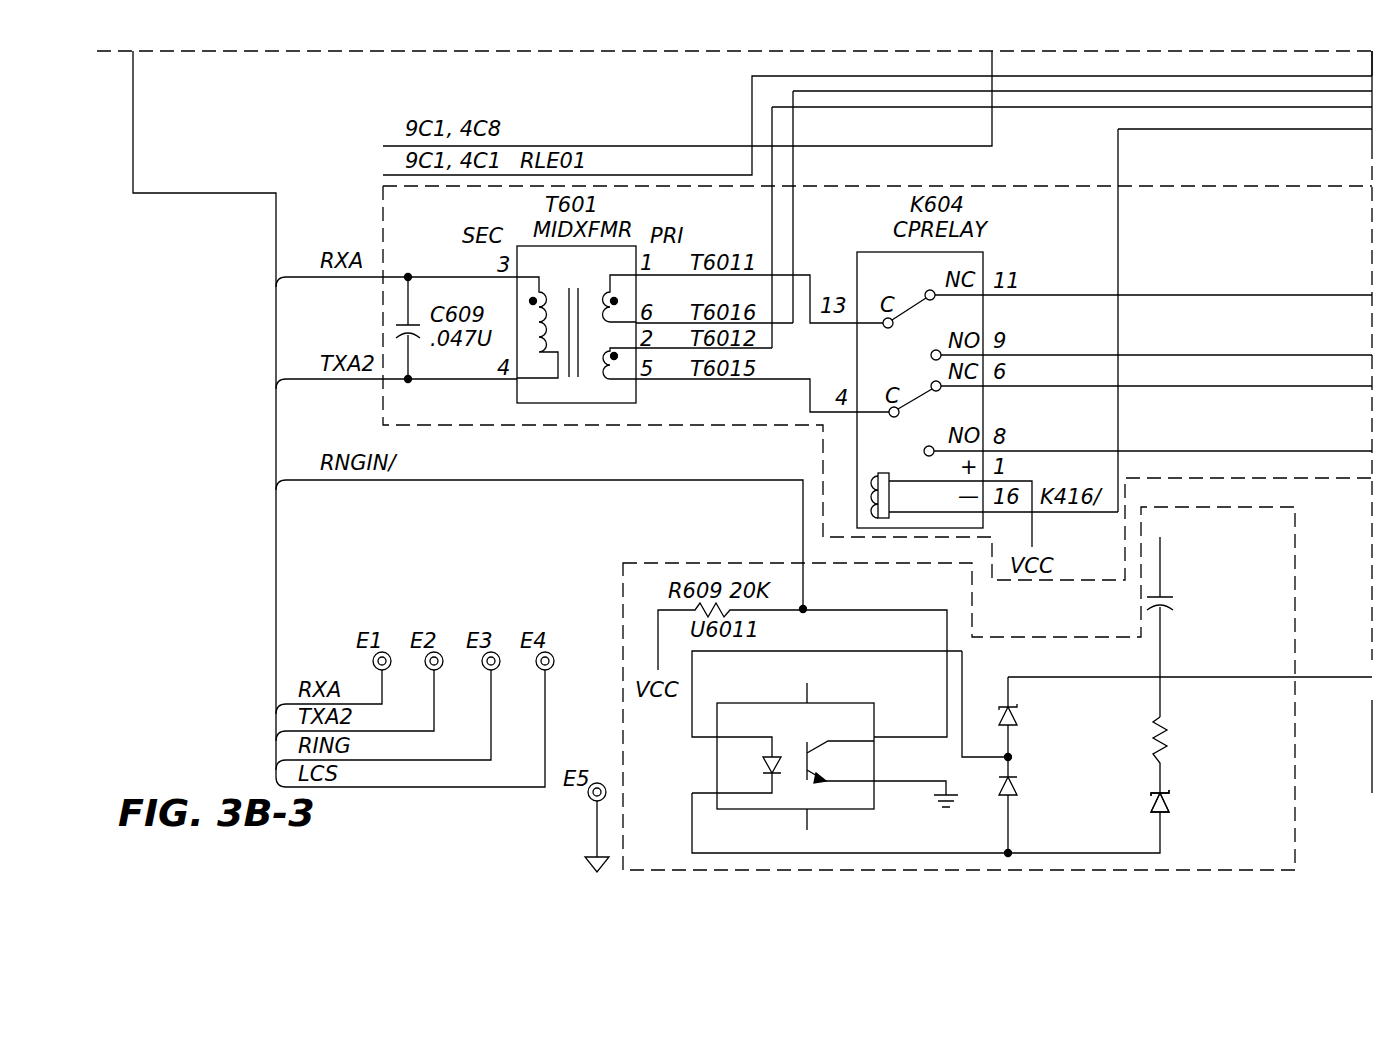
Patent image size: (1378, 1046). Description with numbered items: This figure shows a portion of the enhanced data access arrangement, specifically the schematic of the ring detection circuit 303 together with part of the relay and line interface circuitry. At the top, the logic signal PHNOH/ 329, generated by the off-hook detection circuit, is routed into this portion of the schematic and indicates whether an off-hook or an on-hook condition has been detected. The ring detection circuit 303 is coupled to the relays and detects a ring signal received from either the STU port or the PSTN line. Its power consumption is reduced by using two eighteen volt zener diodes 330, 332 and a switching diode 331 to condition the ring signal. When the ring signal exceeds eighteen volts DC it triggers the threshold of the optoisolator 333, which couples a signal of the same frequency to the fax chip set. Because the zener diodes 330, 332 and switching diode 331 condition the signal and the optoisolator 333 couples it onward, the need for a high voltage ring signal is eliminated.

The logic signal PHNOH/ 329 is at (600, 146).
The zener diode 330 is at (1014, 725).
The switching diode 331 is at (1014, 795).
The zener diode 332 is at (1163, 812).
The optoisolator 333 is at (874, 740).
The ring detection circuit 303 is at (1297, 768).